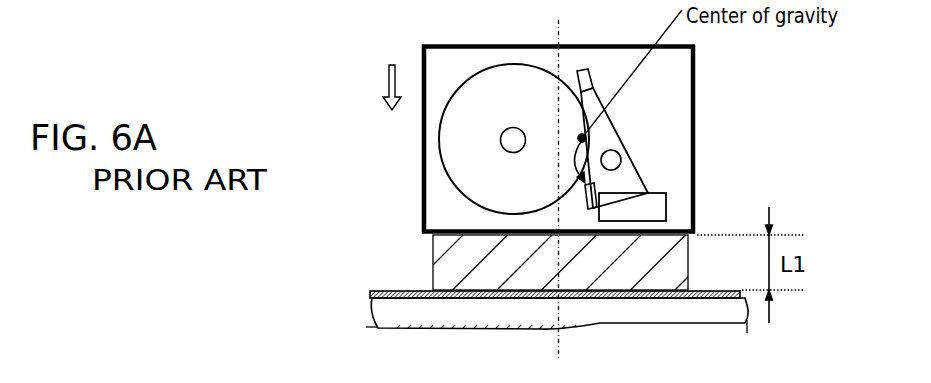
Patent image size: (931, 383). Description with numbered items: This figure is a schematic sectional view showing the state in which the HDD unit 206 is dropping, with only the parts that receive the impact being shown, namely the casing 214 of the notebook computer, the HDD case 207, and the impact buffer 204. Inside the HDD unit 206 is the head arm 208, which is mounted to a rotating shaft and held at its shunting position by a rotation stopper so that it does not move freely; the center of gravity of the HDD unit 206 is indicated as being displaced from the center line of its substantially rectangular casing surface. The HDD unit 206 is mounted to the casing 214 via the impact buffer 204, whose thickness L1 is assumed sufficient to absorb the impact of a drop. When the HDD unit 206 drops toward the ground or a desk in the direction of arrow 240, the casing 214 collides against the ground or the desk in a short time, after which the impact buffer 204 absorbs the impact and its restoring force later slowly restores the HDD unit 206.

The HDD unit 206 is at (422, 207).
The head arm 208 is at (610, 120).
The arrow 240 is at (388, 77).
The impact buffer 204 is at (432, 263).
The HDD case 207 is at (413, 292).
The casing 214 is at (412, 315).